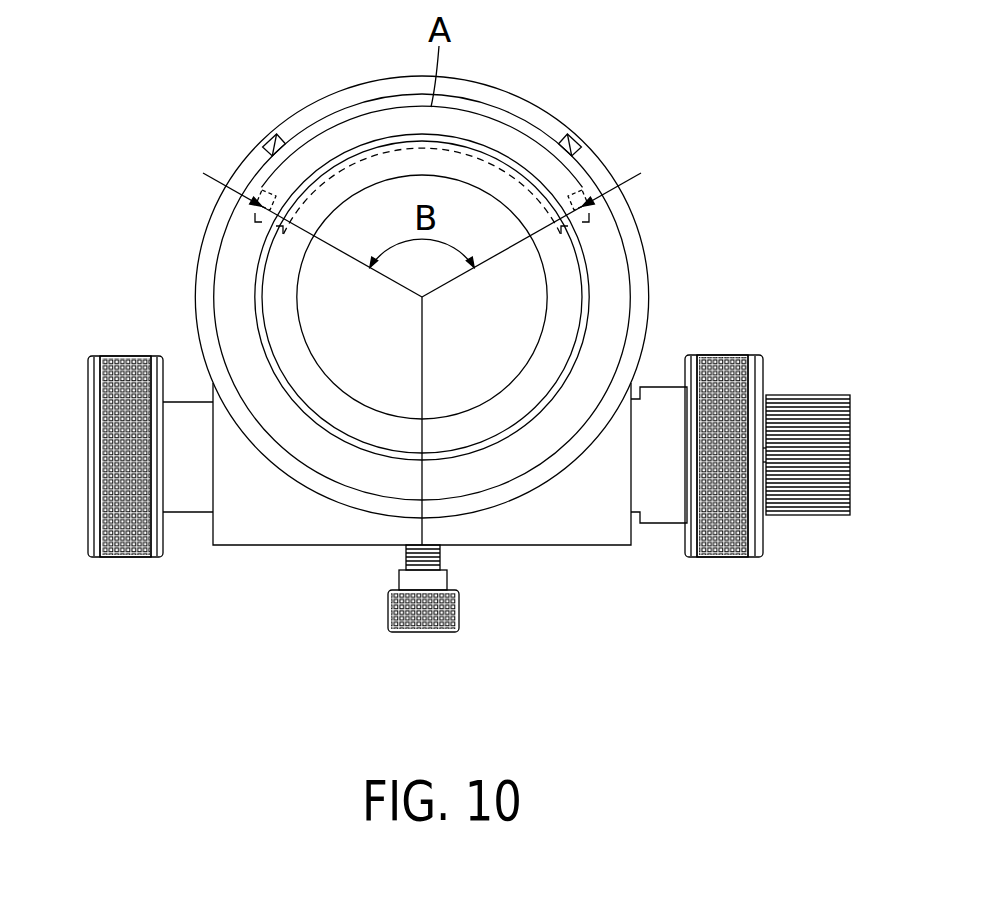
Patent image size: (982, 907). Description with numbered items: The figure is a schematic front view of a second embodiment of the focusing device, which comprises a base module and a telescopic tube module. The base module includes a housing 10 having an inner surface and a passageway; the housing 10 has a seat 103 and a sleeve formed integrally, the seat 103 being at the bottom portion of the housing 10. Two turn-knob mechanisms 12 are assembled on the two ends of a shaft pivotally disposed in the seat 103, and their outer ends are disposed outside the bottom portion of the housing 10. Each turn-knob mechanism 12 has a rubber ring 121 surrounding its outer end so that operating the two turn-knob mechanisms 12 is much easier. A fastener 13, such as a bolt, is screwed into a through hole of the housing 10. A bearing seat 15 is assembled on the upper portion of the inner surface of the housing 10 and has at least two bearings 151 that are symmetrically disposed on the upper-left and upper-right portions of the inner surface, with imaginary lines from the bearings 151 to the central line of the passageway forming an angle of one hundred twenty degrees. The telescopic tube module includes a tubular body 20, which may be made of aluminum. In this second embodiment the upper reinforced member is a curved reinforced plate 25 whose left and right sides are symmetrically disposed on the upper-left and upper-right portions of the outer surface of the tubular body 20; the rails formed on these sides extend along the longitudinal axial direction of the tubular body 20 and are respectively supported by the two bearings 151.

The housing 10 is at (616, 163).
The bearing seat 15 is at (506, 120).
The bearings 151 is at (426, 208).
The curved reinforced plate 25 is at (349, 204).
The tubular body 20 is at (566, 300).
The seat 103 is at (578, 525).
The turn-knob mechanisms 12 is at (114, 349).
The rubber ring 121 is at (133, 537).
The fastener 13 is at (443, 612).